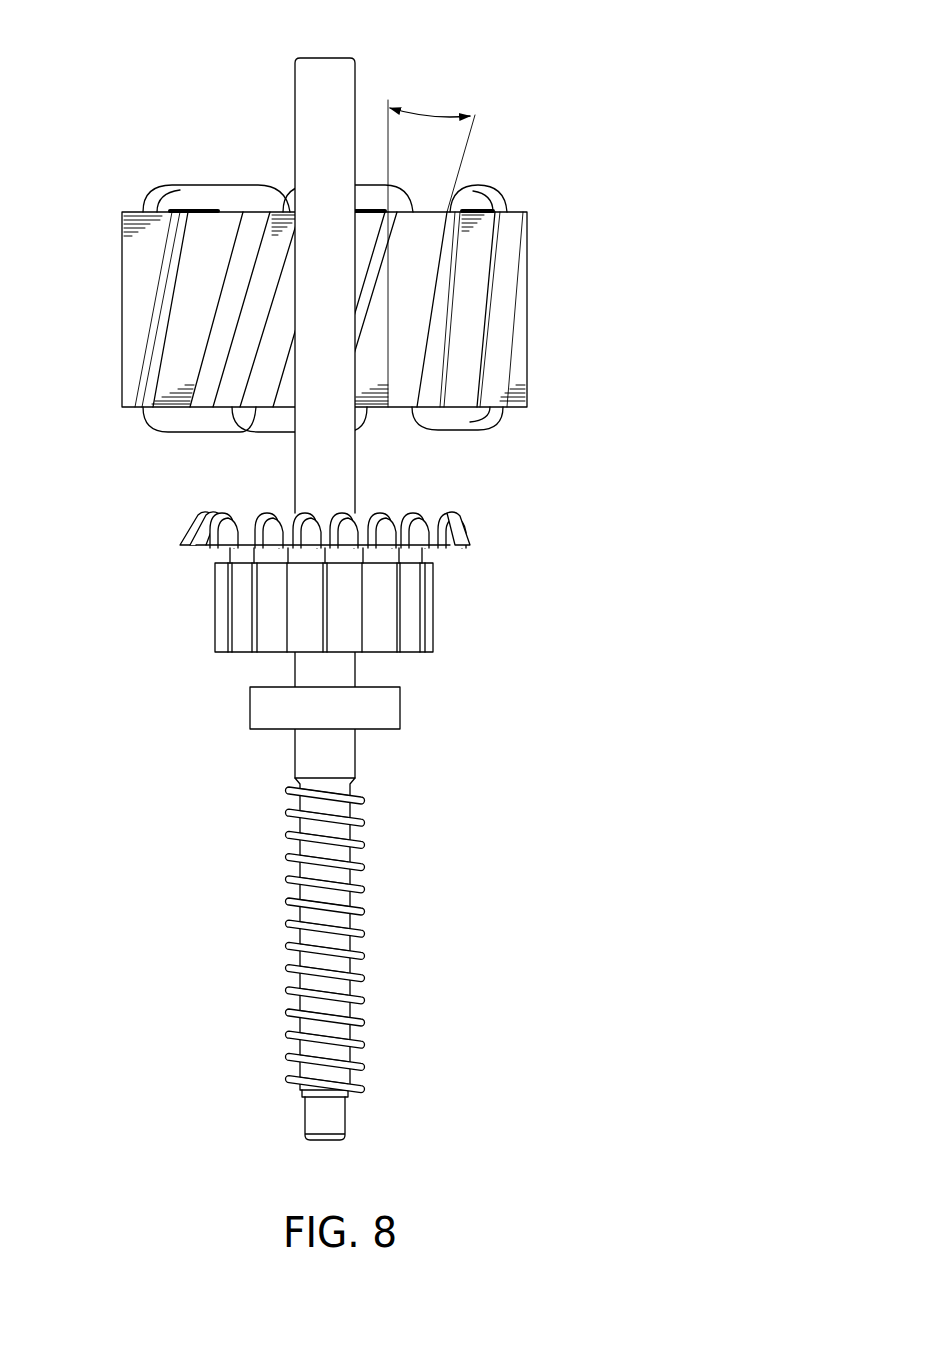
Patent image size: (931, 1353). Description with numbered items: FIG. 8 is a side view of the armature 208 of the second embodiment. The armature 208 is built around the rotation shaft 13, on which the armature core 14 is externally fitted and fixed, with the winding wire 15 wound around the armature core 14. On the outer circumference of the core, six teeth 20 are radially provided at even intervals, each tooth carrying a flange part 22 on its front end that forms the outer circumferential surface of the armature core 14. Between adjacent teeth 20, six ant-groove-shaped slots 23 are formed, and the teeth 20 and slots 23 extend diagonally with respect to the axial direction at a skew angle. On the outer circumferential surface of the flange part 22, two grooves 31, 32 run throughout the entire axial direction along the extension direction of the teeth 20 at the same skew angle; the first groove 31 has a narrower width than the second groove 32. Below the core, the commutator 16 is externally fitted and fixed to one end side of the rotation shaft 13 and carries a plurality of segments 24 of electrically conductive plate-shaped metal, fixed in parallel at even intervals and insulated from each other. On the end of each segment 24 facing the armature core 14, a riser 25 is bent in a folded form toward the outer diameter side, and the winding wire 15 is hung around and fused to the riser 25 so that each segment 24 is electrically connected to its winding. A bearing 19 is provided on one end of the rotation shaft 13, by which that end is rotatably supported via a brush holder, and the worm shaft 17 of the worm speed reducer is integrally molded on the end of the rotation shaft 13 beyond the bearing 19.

The rotation shaft 13 is at (297, 90).
The armature core 14 is at (377, 288).
The winding wire 15 is at (215, 210).
The commutator 16 is at (356, 610).
The worm shaft 17 is at (348, 920).
The bearing 19 is at (400, 708).
The teeth 20 is at (345, 354).
The flange part 22 is at (140, 283).
The slots 23 is at (253, 235).
The segments 24 is at (262, 640).
The riser 25 is at (438, 532).
The first groove 31 is at (337, 390).
The second groove 32 is at (260, 378).
The armature 208 is at (530, 190).